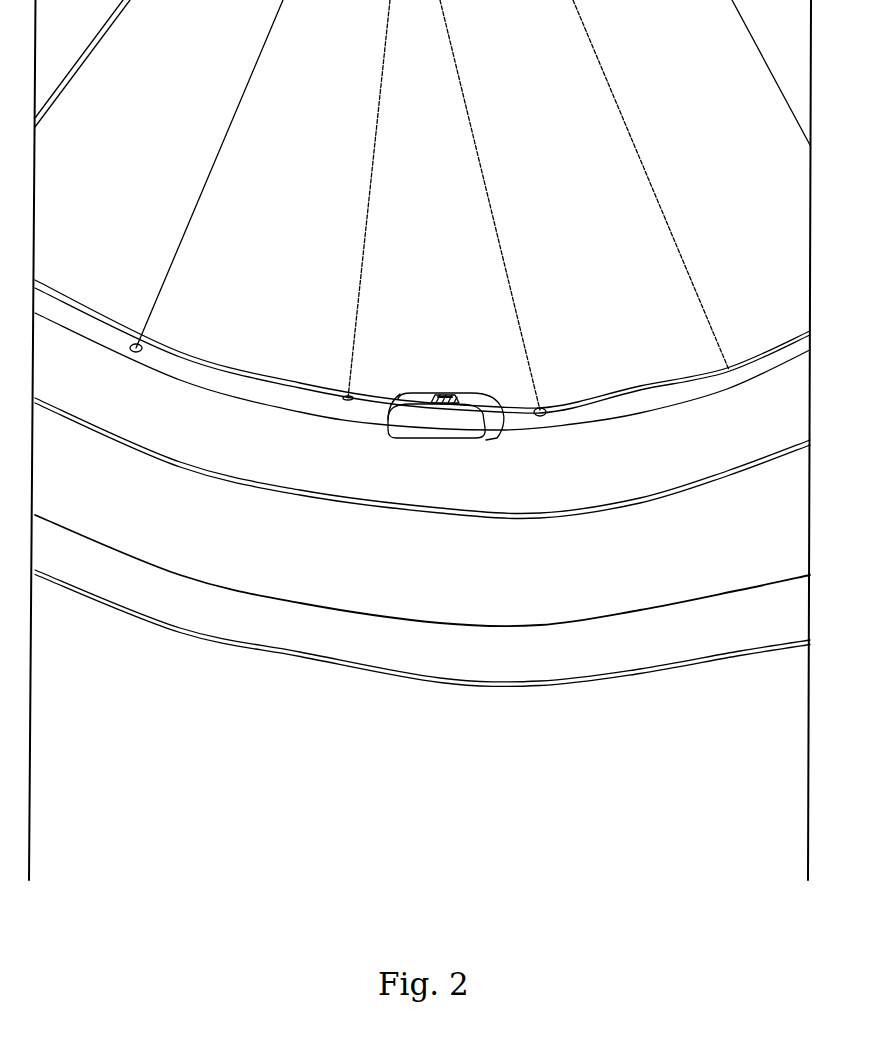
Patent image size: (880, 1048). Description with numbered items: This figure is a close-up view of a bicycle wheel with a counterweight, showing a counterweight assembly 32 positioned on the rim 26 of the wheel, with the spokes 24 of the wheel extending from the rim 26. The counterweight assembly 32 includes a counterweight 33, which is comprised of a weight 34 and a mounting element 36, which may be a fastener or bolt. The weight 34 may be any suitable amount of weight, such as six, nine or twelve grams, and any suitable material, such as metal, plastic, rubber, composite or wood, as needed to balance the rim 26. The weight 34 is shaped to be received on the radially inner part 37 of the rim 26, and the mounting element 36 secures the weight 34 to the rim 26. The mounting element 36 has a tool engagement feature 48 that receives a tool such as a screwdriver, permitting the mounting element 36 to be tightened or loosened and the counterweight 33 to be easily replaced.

The spokes 24 is at (640, 163).
The rim 26 is at (228, 625).
The counterweight assembly 32 is at (464, 391).
The counterweight 33 is at (492, 442).
The weight 34 is at (410, 434).
The mounting element 36 is at (451, 393).
The radially inner part 37 is at (637, 394).
The tool engagement feature 48 is at (415, 388).